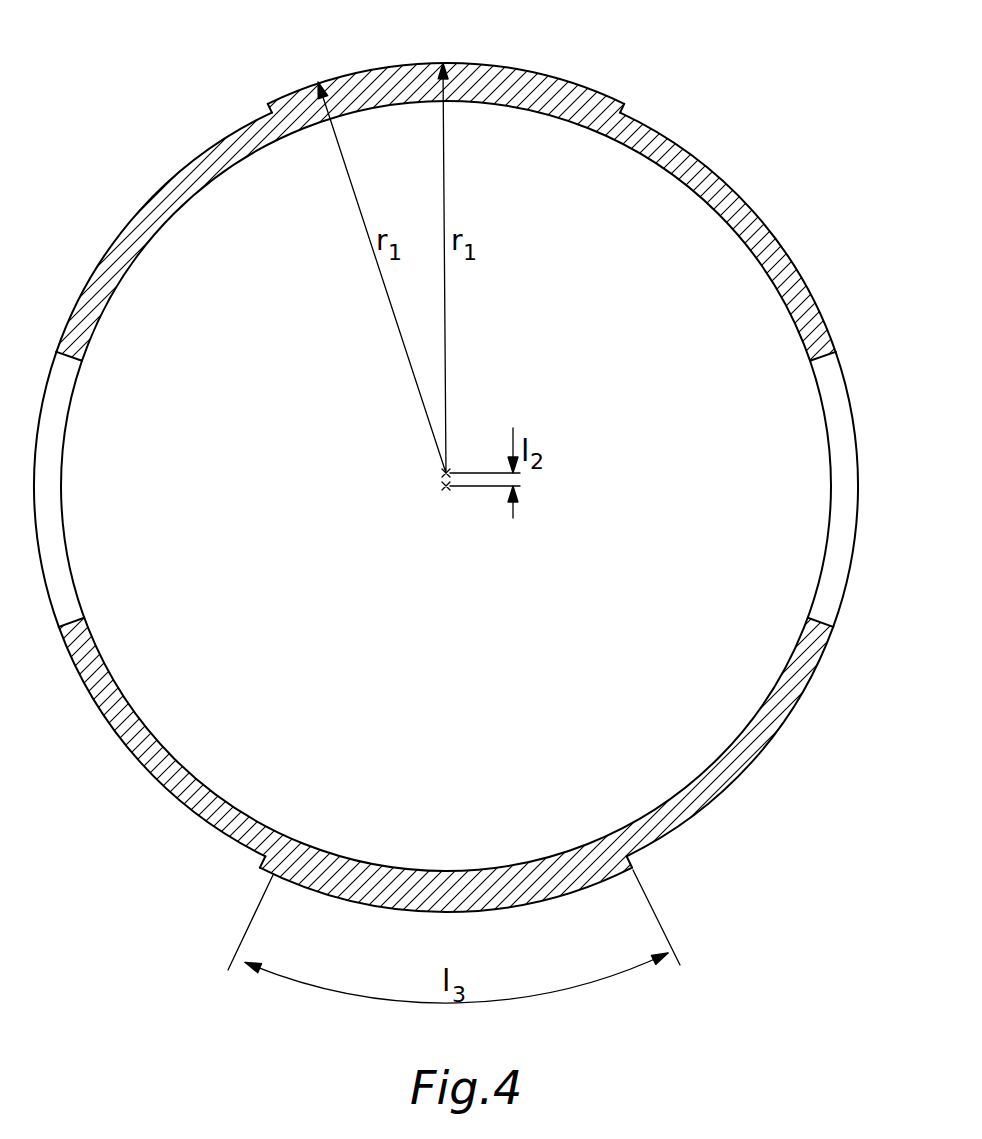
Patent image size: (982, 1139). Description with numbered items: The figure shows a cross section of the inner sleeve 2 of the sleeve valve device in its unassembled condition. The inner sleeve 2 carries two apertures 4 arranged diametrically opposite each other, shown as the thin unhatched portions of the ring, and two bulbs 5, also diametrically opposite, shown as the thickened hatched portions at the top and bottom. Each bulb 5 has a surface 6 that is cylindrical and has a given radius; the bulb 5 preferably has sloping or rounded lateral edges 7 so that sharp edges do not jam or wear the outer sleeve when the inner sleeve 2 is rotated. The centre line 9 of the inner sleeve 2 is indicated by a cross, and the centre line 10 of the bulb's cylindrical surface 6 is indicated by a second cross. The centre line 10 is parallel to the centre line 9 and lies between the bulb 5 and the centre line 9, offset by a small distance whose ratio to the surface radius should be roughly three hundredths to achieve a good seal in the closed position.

The inner sleeve 2 is at (138, 224).
The aperture 4 is at (838, 412).
The bulb 5 is at (480, 63).
The surface 6 is at (557, 78).
The lateral edge 7 is at (621, 103).
The centre line 9 is at (446, 490).
The centre line 10 is at (444, 473).